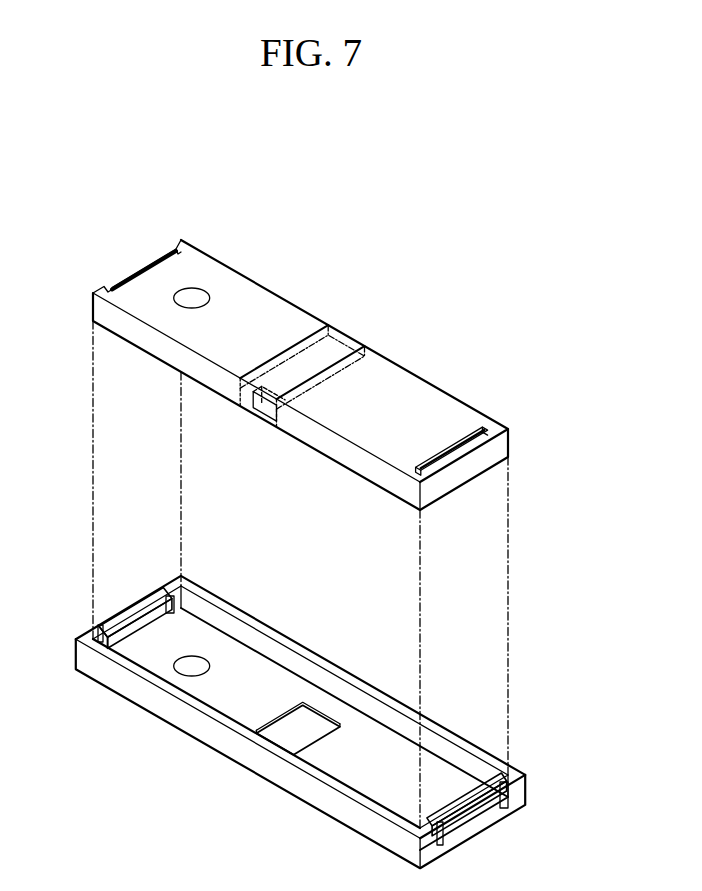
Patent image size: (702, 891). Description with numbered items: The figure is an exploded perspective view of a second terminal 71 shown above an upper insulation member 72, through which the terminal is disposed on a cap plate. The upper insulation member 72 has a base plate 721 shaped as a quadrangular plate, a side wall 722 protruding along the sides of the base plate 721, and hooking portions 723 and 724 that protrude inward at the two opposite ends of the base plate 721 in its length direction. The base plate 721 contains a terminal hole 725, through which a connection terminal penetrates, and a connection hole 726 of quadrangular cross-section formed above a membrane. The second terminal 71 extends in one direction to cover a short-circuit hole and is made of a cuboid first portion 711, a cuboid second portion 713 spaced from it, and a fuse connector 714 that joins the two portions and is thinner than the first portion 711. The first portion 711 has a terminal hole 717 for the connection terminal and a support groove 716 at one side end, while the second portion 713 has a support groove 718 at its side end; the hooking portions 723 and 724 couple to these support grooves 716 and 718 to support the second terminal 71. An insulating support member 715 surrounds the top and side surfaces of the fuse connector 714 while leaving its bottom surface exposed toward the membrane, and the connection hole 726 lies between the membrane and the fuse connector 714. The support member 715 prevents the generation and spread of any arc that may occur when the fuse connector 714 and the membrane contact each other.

The second terminal 71 is at (308, 344).
The first portion 711 is at (215, 270).
The second portion 713 is at (432, 402).
The fuse connector 714 is at (310, 367).
The support member 715 is at (258, 405).
The support groove 716 is at (113, 288).
The terminal hole 717 is at (188, 298).
The support groove 718 is at (468, 457).
The upper insulation member 72 is at (307, 696).
The base plate 721 is at (353, 740).
The side wall 722 is at (298, 667).
The hooking portion 723 is at (467, 805).
The hooking portion 724 is at (140, 610).
The terminal hole 725 is at (185, 673).
The connection hole 726 is at (266, 748).